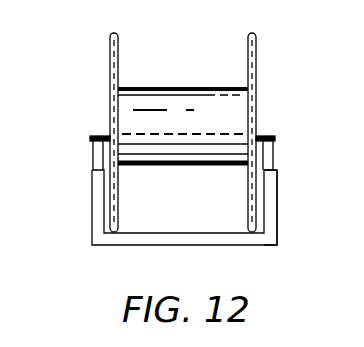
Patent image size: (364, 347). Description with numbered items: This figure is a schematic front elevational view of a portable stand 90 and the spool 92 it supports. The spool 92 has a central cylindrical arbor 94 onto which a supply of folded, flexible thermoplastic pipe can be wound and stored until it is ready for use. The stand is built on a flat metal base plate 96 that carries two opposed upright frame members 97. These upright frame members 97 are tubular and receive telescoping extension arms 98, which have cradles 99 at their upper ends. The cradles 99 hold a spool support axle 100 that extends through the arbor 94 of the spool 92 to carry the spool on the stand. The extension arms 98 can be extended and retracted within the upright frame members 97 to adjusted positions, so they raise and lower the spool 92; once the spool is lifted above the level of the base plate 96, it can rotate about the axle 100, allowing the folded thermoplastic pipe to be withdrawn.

The portable stand 90 is at (82, 253).
The spool 92 is at (110, 71).
The central cylindrical arbor 94 is at (188, 86).
The flat metal base plate 96 is at (197, 246).
The upright frame members 97 is at (278, 224).
The telescoping extension arms 98 is at (91, 156).
The cradles 99 is at (90, 137).
The spool support axle 100 is at (242, 134).